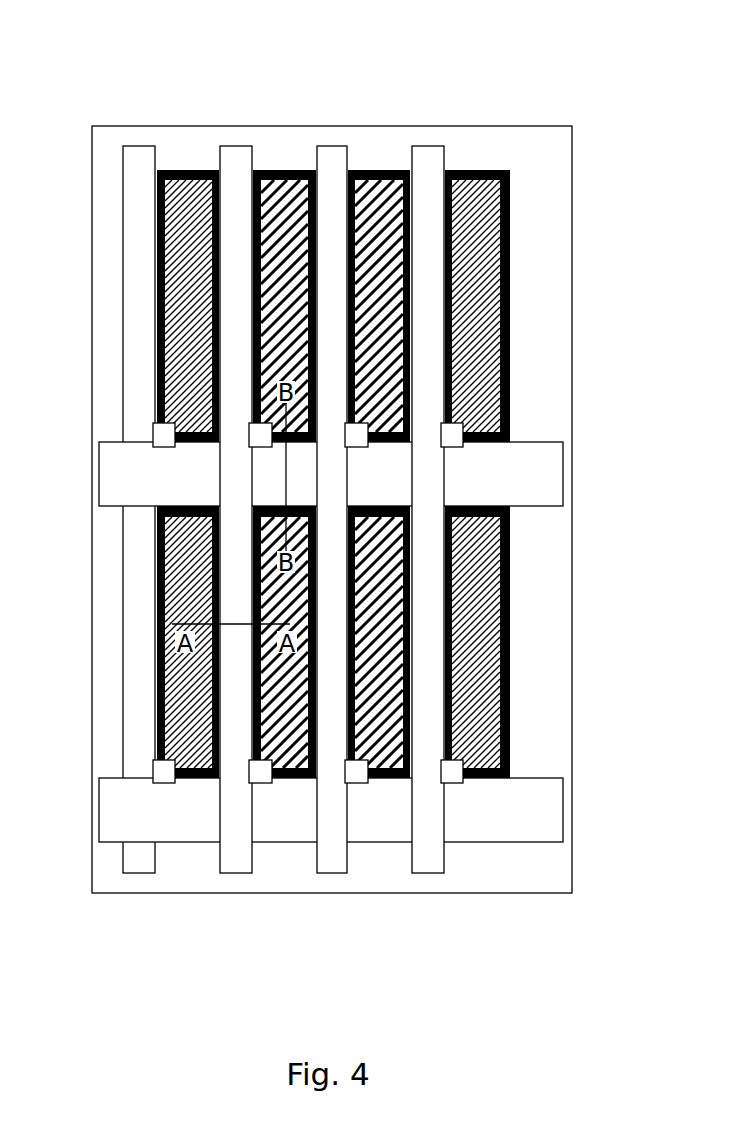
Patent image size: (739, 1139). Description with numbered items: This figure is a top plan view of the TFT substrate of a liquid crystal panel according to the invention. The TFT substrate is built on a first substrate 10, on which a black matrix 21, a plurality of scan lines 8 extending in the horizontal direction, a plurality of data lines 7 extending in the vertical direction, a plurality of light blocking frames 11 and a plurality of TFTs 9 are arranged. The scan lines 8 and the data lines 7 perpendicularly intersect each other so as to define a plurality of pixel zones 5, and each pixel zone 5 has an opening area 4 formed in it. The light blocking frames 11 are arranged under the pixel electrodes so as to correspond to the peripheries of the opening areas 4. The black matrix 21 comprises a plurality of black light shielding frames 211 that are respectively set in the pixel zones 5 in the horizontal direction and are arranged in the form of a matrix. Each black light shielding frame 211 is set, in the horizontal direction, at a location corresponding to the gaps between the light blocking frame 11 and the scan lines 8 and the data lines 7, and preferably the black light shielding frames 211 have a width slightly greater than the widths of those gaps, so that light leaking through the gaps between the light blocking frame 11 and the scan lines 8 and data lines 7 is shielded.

The opening area 4 is at (473, 288).
The pixel zone 5 is at (155, 515).
The data line 7 is at (433, 160).
The scan line 8 is at (517, 468).
The TFT 9 is at (167, 432).
The first substrate 10 is at (548, 633).
The light blocking frame 11 is at (181, 170).
The black matrix 21 is at (323, 221).
The black light shielding frame 211 is at (281, 170).